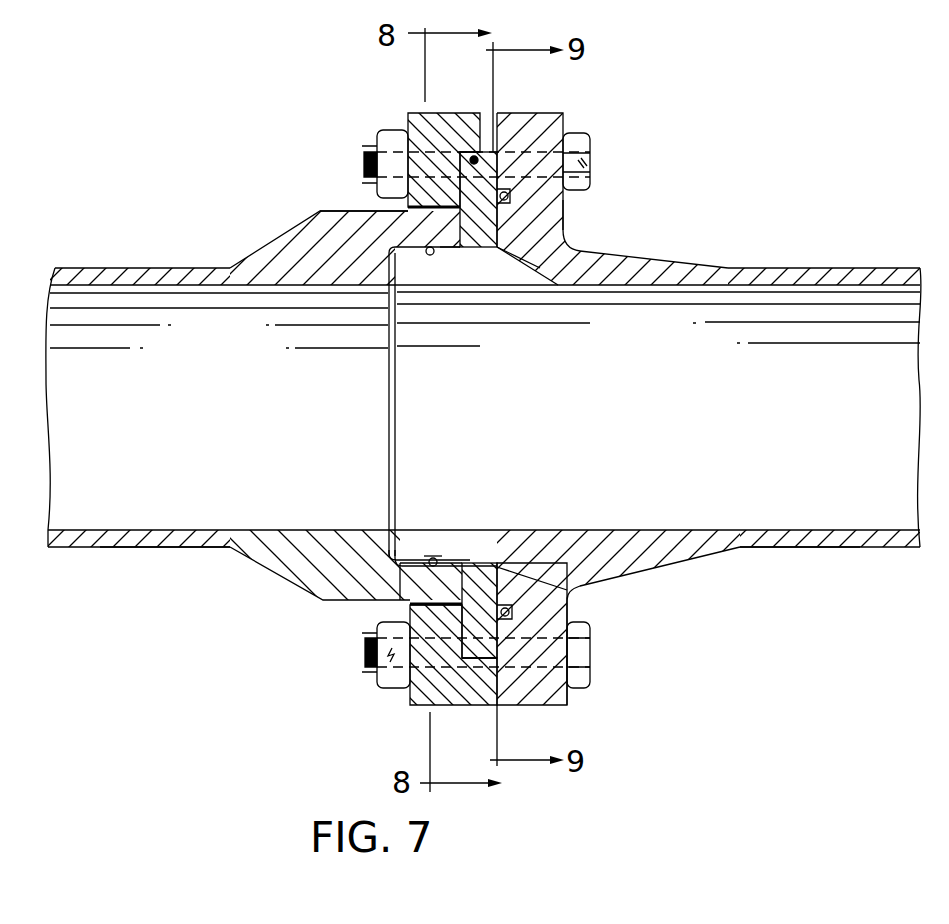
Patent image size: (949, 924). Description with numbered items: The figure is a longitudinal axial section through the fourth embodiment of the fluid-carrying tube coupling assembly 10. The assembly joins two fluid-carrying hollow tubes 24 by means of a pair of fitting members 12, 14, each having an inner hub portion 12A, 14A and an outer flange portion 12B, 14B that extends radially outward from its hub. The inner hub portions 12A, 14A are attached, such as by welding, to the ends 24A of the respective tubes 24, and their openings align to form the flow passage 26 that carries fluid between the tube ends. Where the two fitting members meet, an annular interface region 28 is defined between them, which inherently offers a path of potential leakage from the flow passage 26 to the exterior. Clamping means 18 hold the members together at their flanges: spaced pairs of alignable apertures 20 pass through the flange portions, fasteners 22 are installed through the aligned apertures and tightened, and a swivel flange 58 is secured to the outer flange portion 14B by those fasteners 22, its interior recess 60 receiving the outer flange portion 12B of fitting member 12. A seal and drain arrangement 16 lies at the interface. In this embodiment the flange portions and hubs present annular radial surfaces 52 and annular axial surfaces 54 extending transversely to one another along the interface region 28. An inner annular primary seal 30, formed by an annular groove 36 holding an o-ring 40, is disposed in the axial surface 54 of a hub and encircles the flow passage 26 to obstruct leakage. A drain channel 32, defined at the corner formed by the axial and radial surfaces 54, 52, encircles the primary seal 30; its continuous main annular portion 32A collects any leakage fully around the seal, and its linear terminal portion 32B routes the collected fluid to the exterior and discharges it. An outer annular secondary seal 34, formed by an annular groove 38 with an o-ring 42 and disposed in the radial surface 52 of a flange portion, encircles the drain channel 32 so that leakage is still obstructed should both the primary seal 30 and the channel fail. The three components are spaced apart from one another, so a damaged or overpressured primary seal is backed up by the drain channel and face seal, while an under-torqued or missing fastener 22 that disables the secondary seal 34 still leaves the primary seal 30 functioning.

The tube coupling assembly 10 is at (680, 100).
The fitting member 12 is at (337, 409).
The inner hub portion 12A is at (246, 258).
The outer flange portion 12B is at (386, 207).
The fitting member 14 is at (631, 386).
The inner hub portion 14A is at (672, 266).
The outer flange portion 14B is at (566, 206).
The seal and drain arrangement 16 is at (514, 238).
The clamping means 18 is at (594, 152).
The alignable apertures 20 is at (582, 130).
The fasteners 22 is at (370, 170).
The hollow tubes 24 is at (128, 262).
The tube ends 24A is at (162, 549).
The flow passage 26 is at (258, 293).
The annular interface region 28 is at (398, 430).
The inner annular primary seal 30 is at (437, 556).
The drain channel 32 is at (526, 405).
The main annular portion 32A is at (492, 254).
The linear terminal portion 32B is at (530, 574).
The outer annular secondary seal 34 is at (512, 614).
The annular groove 36 is at (441, 257).
The annular groove 38 is at (506, 189).
The o-ring 40 is at (426, 556).
The o-ring 42 is at (514, 612).
The annular radial surfaces 52 is at (512, 222).
The annular axial surfaces 54 is at (455, 255).
The swivel flange 58 is at (410, 605).
The interior recess 60 is at (474, 155).